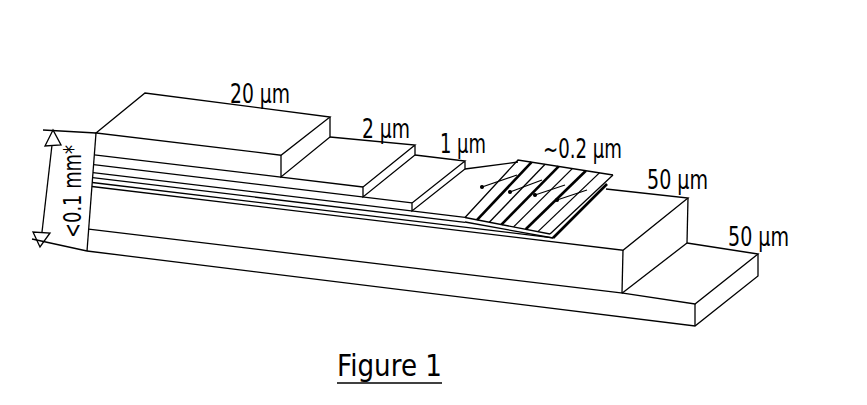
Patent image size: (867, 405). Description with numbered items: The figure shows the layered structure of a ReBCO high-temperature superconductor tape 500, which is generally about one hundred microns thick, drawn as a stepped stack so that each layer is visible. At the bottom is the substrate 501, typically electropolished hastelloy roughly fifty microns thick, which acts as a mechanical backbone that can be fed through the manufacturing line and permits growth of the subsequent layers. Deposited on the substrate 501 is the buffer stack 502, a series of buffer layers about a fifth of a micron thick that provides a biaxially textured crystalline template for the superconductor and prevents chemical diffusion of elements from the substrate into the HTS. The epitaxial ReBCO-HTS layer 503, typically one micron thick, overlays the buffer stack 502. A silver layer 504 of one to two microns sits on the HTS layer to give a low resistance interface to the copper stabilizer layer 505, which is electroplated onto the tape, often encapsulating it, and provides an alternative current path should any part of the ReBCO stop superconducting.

The tape 500 is at (246, 305).
The substrate 501 is at (638, 218).
The buffer stack 502 is at (530, 173).
The ReBCO-HTS layer 503 is at (430, 177).
The silver layer 504 is at (353, 158).
The copper stabilizer layer 505 is at (218, 120).